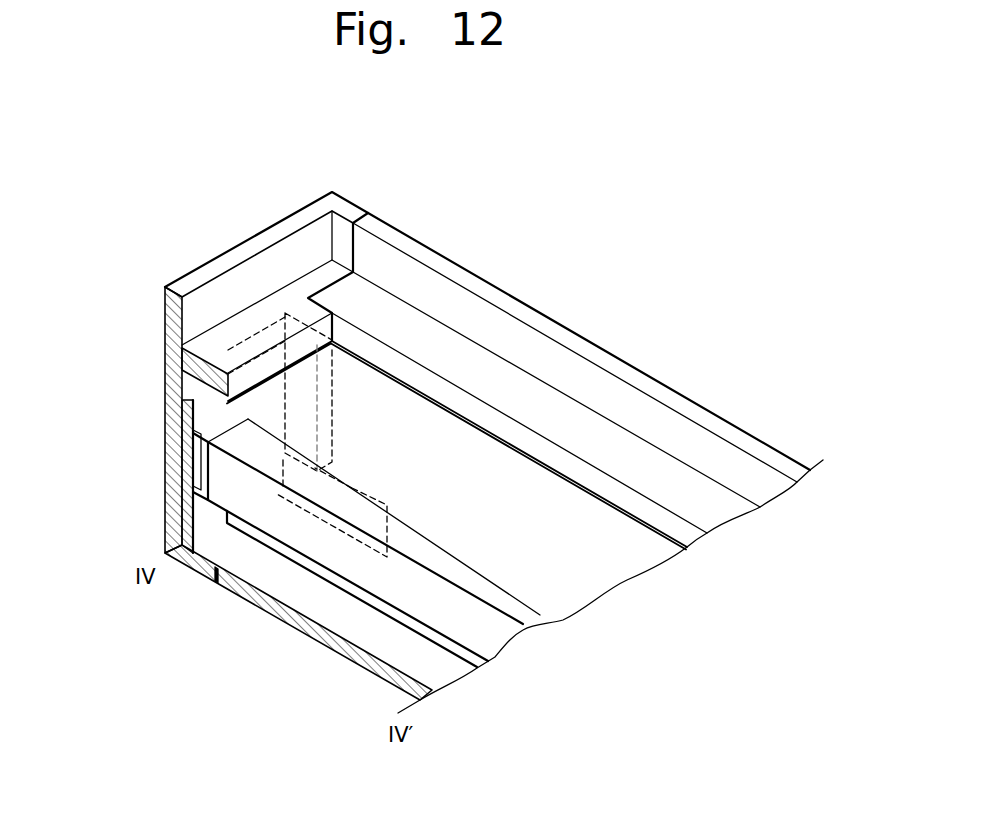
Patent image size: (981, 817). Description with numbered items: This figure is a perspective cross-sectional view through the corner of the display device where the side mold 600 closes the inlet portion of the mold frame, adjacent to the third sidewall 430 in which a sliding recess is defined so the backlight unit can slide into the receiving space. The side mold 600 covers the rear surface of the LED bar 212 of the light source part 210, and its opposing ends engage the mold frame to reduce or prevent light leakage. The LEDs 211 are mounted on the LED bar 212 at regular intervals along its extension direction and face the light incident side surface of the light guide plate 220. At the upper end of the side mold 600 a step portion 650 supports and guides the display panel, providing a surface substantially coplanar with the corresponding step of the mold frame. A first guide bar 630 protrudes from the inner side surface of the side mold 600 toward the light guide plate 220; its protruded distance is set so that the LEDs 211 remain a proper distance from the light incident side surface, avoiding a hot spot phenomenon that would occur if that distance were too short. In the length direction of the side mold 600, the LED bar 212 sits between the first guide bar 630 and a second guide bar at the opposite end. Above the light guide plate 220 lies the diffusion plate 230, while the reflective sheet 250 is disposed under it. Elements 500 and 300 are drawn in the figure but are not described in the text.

The side mold 600 is at (274, 233).
The third sidewall 430 is at (600, 355).
The step portion 650 is at (222, 333).
The light source part 210 is at (78, 425).
The LED bar 212 is at (185, 426).
The light emitting diode 211 is at (196, 464).
The first guide bar 630 is at (323, 405).
The mold frame 500 is at (245, 565).
The bottom chassis 300 is at (305, 625).
The reflective sheet 250 is at (473, 663).
The light guide plate 220 is at (513, 630).
The diffusion plate 230 is at (540, 615).